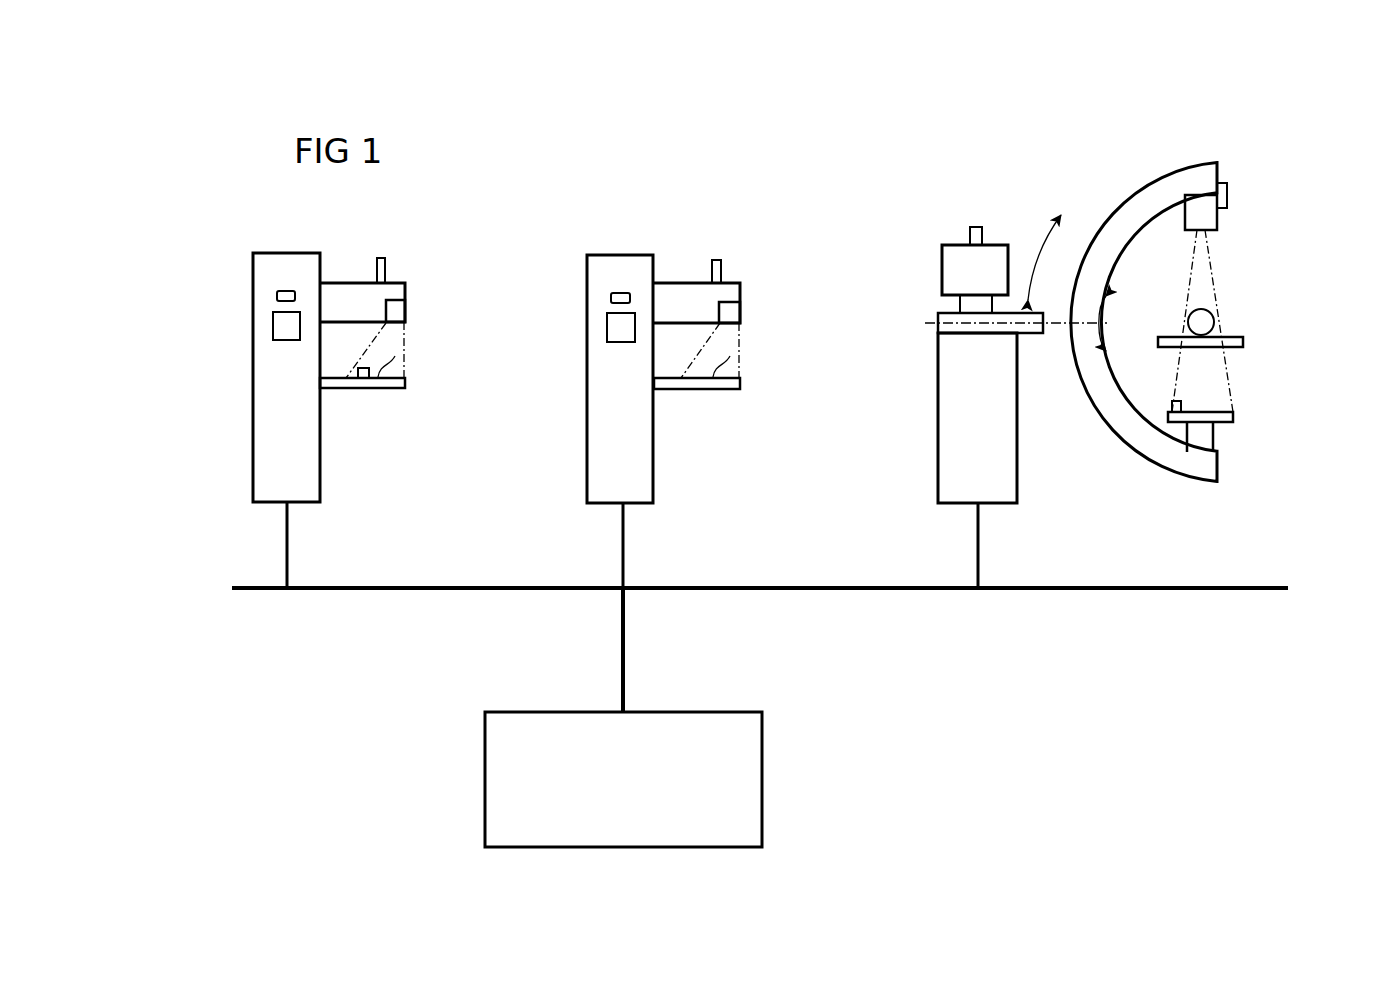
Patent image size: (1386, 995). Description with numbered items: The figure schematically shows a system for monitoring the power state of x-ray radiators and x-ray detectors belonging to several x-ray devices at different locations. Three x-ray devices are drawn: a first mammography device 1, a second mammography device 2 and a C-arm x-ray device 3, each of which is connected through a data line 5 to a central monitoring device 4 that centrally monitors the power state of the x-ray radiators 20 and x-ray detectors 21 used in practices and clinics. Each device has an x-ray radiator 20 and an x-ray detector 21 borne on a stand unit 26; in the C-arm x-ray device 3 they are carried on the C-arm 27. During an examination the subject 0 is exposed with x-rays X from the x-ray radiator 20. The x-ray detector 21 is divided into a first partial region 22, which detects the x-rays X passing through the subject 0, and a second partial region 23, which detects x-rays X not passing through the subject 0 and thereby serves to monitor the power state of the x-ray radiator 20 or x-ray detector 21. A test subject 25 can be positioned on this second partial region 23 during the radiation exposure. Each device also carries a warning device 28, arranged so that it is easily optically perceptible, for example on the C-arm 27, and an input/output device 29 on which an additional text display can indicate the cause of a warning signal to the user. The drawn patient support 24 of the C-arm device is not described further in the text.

The first mammography device 1 is at (246, 218).
The second mammography device 2 is at (605, 220).
The C-arm x-ray device 3 is at (935, 220).
The monitoring device 4 is at (762, 778).
The data line 5 is at (625, 650).
The x-ray radiator 20 is at (404, 310).
The x-ray detector 21 is at (400, 408).
The first partial region 22 is at (405, 386).
The second partial region 23 is at (330, 389).
The patient table 24 is at (1168, 338).
The test subject 25 is at (362, 382).
The stand unit 26 is at (283, 460).
The C-arm 27 is at (1125, 197).
The warning device 28 is at (381, 258).
The input/output device 29 is at (290, 340).
The subject 0 is at (393, 372).
The x-rays X is at (405, 342).